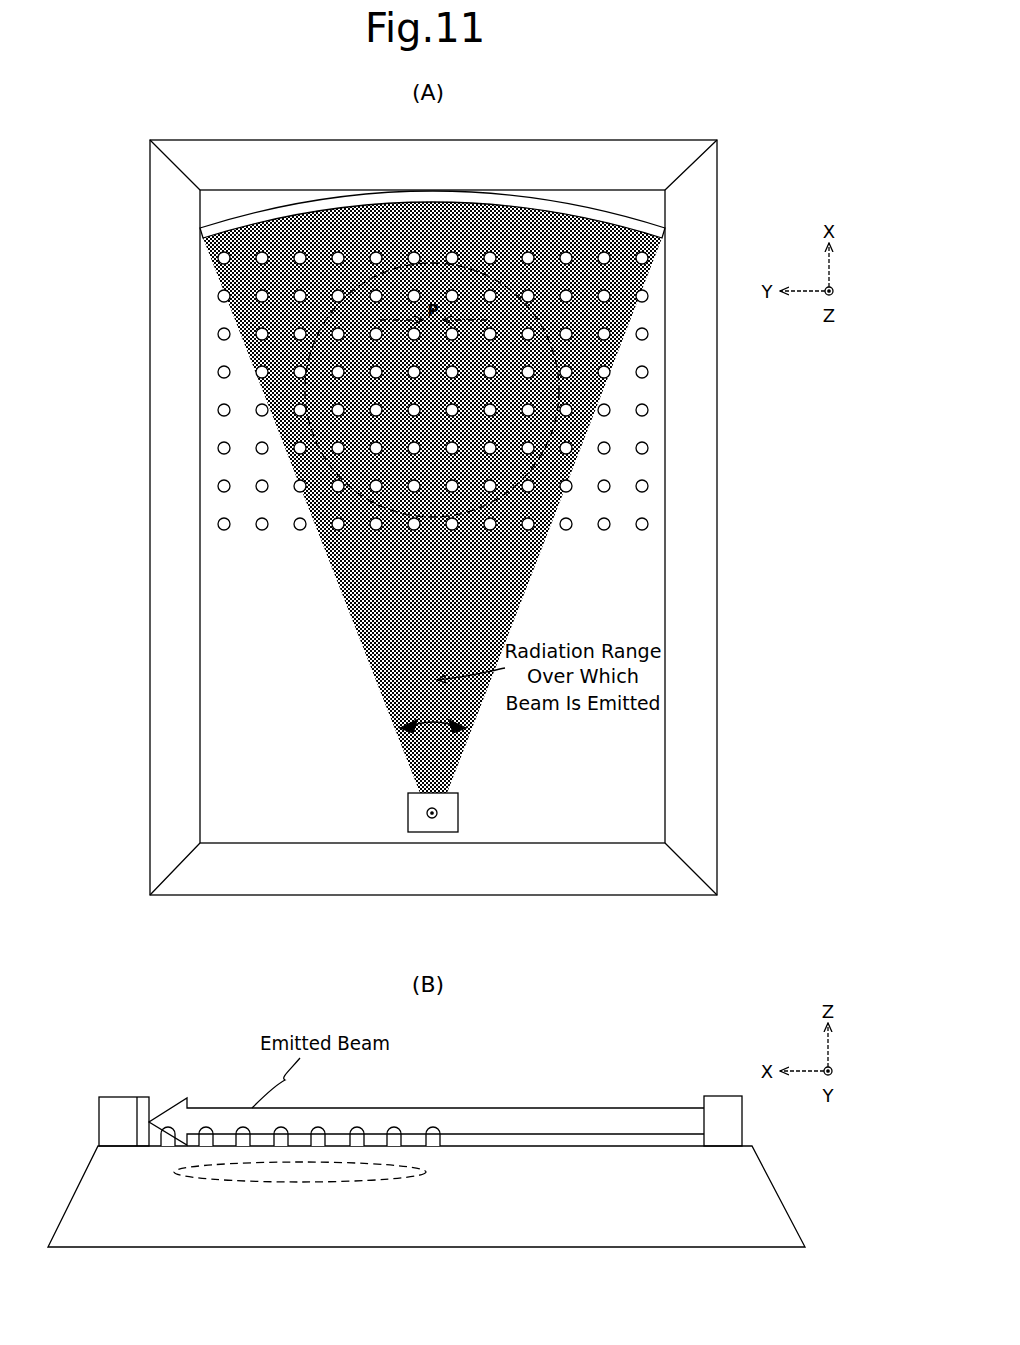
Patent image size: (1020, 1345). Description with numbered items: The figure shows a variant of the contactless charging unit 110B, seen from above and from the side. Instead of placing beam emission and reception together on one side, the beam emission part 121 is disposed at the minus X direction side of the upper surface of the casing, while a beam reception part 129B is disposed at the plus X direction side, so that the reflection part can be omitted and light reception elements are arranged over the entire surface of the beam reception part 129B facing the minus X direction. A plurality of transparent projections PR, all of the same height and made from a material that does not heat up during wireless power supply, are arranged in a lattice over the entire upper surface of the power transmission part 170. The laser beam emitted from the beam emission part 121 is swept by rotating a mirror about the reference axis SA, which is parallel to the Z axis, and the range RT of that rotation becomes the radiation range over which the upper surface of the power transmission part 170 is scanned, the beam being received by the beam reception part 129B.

The contactless charging unit 110B is at (738, 172).
The beam reception part 129B is at (245, 226).
The power transmission part 170 is at (265, 390).
The beam emission part 121 is at (458, 820).
The projections PR is at (648, 447).
The range of rotation of the mirror RT is at (427, 718).
The reference axis SA is at (427, 813).